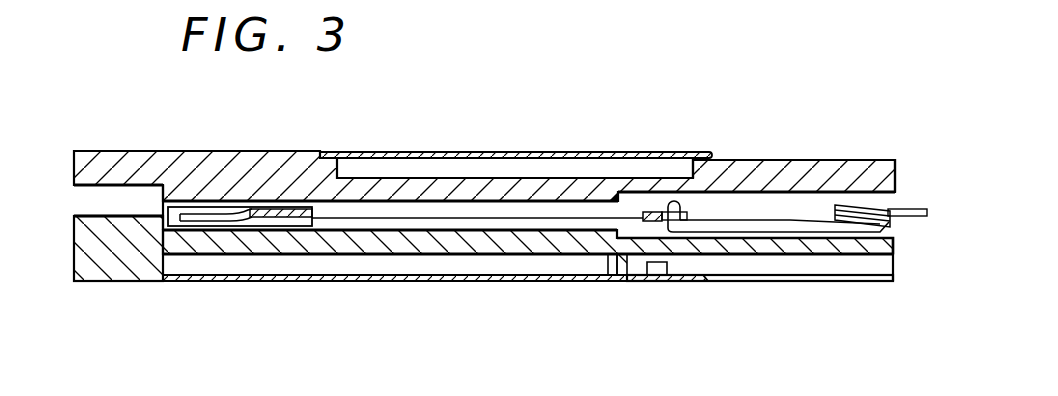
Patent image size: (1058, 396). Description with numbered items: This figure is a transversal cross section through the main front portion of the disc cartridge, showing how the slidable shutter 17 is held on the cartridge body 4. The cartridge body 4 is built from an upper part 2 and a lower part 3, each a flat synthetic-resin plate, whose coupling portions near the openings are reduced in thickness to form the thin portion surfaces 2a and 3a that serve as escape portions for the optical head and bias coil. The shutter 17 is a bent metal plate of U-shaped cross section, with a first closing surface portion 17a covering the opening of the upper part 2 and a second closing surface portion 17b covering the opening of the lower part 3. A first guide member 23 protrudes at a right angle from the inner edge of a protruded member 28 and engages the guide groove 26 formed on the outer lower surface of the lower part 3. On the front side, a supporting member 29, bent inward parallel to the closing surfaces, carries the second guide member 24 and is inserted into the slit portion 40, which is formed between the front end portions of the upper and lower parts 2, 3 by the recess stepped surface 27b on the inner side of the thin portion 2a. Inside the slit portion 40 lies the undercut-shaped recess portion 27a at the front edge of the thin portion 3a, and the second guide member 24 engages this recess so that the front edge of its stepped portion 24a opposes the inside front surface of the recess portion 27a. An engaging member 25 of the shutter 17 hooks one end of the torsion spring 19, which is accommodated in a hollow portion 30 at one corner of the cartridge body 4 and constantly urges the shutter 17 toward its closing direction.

The upper part 2 is at (178, 151).
The thin portion surface 2a is at (427, 190).
The lower part 3 is at (106, 281).
The thin portion surface 3a is at (568, 245).
The cartridge body 4 is at (840, 152).
The slidable shutter 17 is at (565, 152).
The first closing surface portion 17a is at (490, 152).
The second closing surface portion 17b is at (527, 281).
The torsion spring 19 is at (863, 222).
The first guide member 23 is at (655, 266).
The second guide member 24 is at (178, 215).
The stepped portion 24a is at (213, 222).
The engaging member 25 is at (653, 215).
The guide groove 26 is at (757, 270).
The undercut-shaped recess portion 27a is at (384, 231).
The recess stepped surface 27b is at (463, 207).
The protruded member 28 is at (697, 280).
The supporting member 29 is at (272, 210).
The hollow portion 30 is at (764, 205).
The slit portion 40 is at (345, 212).